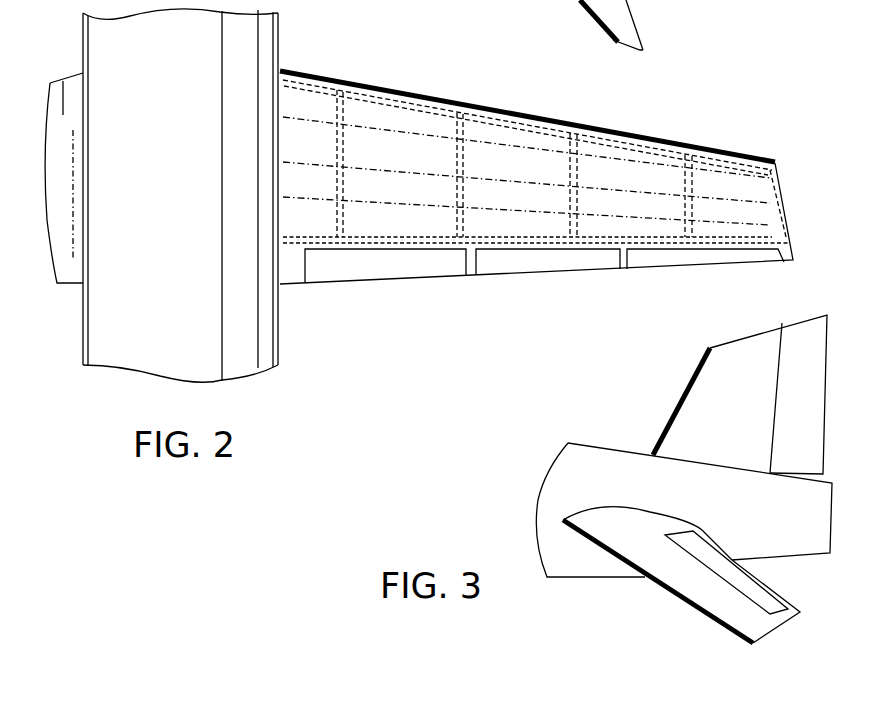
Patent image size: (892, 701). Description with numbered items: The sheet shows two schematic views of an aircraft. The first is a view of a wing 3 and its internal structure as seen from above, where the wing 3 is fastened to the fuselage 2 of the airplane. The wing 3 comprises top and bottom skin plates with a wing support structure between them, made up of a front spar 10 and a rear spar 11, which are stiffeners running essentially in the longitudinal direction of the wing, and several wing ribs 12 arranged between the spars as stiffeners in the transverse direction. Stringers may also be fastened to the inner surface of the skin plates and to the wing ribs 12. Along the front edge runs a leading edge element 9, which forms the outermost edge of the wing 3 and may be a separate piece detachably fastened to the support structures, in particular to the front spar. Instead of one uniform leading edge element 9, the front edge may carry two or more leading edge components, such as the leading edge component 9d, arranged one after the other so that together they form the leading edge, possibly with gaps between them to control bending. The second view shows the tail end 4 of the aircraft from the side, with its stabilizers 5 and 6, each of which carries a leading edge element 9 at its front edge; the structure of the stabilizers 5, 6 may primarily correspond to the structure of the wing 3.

In FIG. 2, the fuselage 2 is at (167, 229).
In FIG. 2, the wing 3 is at (805, 145).
In FIG. 3, the tail end 4 is at (562, 404).
In FIG. 3, the stabilizer 5 is at (647, 549).
In FIG. 3, the stabilizer 6 is at (744, 419).
In FIG. 2, the leading edge element 9 is at (426, 93).
In FIG. 3, the leading edge element 9 is at (678, 403).
In FIG. 2, the leading edge component 9d is at (592, 15).
In FIG. 2, the front spar 10 is at (512, 118).
In FIG. 2, the rear spar 11 is at (412, 244).
In FIG. 2, the wing rib 12 is at (337, 135).